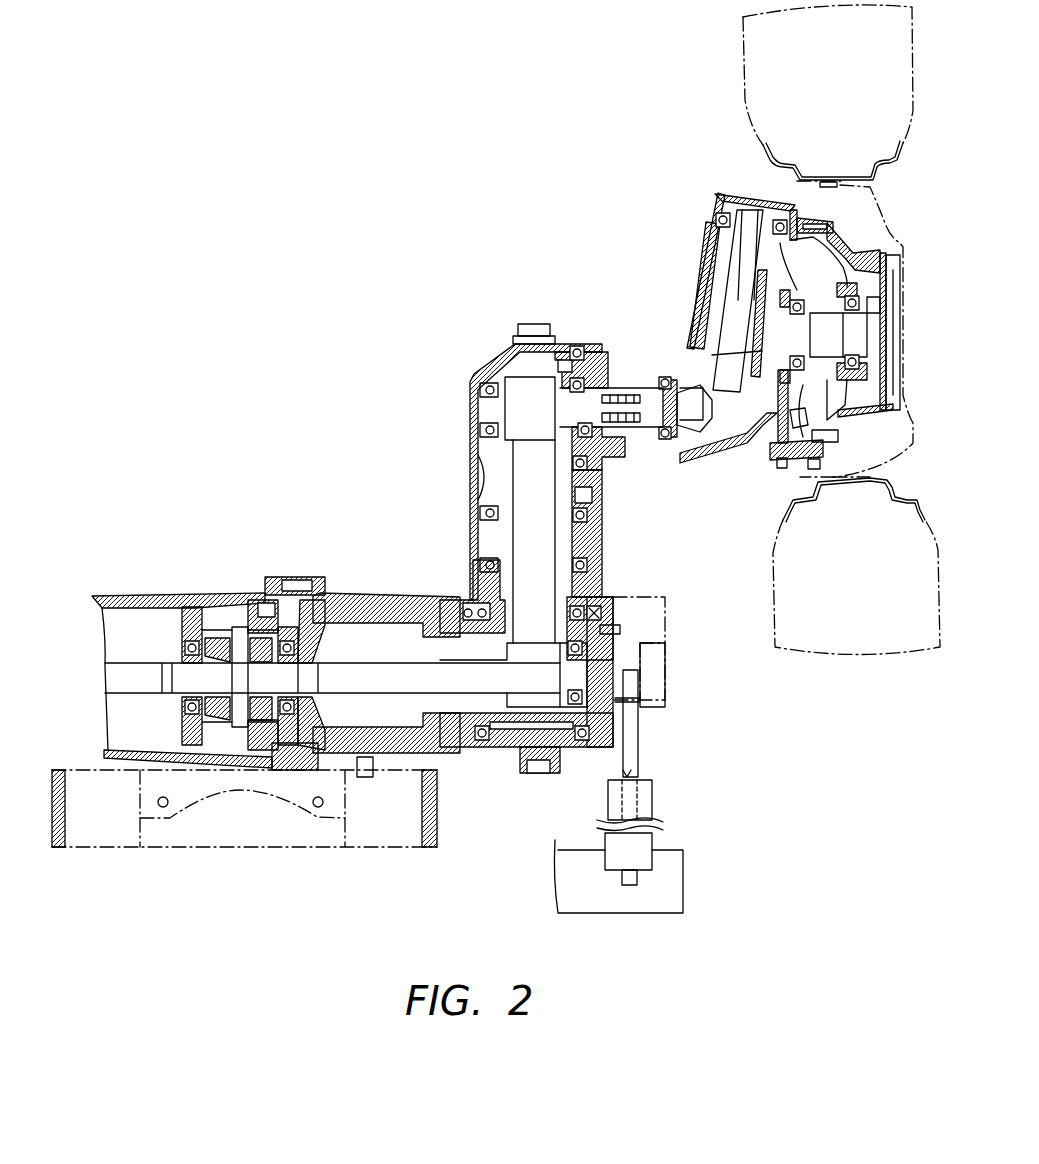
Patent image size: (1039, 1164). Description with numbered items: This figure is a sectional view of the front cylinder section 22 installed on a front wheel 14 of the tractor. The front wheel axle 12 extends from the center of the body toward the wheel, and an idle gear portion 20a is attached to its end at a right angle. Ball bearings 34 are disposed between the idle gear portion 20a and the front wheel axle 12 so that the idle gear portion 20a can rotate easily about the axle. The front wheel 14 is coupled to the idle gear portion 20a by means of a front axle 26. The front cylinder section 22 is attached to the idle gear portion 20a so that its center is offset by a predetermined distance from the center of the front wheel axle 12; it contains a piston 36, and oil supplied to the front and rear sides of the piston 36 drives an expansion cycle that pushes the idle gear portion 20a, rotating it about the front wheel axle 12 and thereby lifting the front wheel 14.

The front wheel axle 12 is at (362, 662).
The front wheel 14 is at (879, 647).
The idle gear portion 20a is at (603, 540).
The front cylinder section 22 is at (650, 806).
The front axle 26 is at (493, 390).
The ball bearing 34 is at (470, 604).
The piston 36 is at (638, 732).